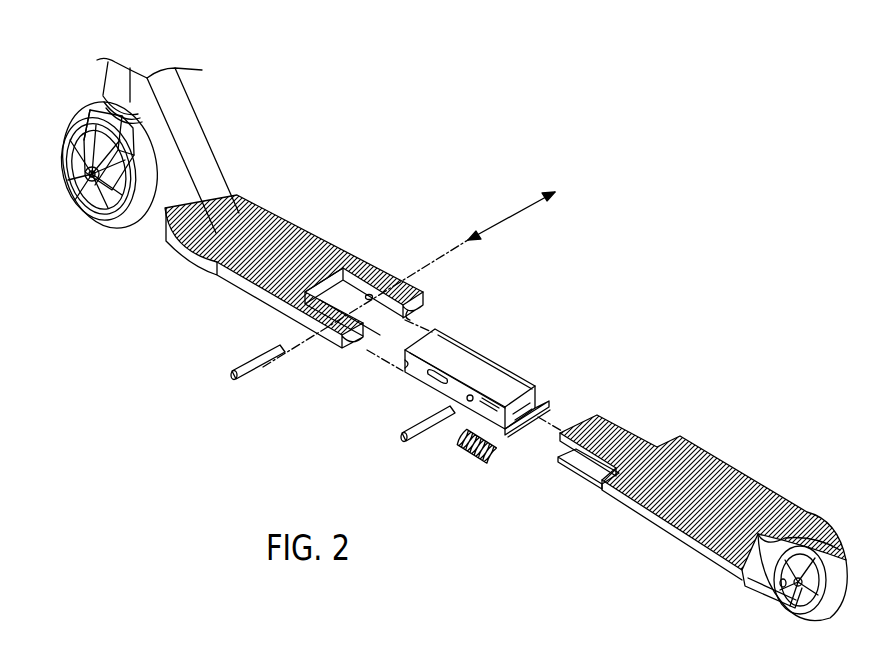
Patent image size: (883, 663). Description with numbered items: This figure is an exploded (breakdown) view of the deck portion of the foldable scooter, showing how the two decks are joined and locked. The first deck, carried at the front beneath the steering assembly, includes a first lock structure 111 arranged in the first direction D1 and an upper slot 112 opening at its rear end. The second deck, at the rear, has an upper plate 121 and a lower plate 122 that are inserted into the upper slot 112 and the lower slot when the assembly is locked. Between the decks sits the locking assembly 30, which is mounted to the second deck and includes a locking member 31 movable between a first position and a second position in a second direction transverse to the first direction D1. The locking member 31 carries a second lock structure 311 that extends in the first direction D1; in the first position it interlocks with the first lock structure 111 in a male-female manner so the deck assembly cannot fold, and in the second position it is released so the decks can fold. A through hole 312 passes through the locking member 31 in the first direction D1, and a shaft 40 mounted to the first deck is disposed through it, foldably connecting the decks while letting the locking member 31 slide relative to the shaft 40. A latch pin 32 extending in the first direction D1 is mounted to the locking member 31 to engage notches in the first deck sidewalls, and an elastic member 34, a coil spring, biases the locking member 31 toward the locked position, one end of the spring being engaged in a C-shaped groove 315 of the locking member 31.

The first lock structure 111 is at (337, 287).
The upper slot 112 is at (408, 303).
The locking assembly 30 is at (465, 375).
The locking member 31 is at (470, 357).
The second lock structure 311 is at (400, 373).
The through hole 312 is at (437, 378).
The C-shaped groove 315 is at (541, 398).
The latch pin 32 is at (421, 434).
The elastic member 34 is at (491, 458).
The shaft 40 is at (252, 361).
The upper plate 121 is at (620, 430).
The lower plate 122 is at (580, 462).
The first direction D1 is at (512, 216).